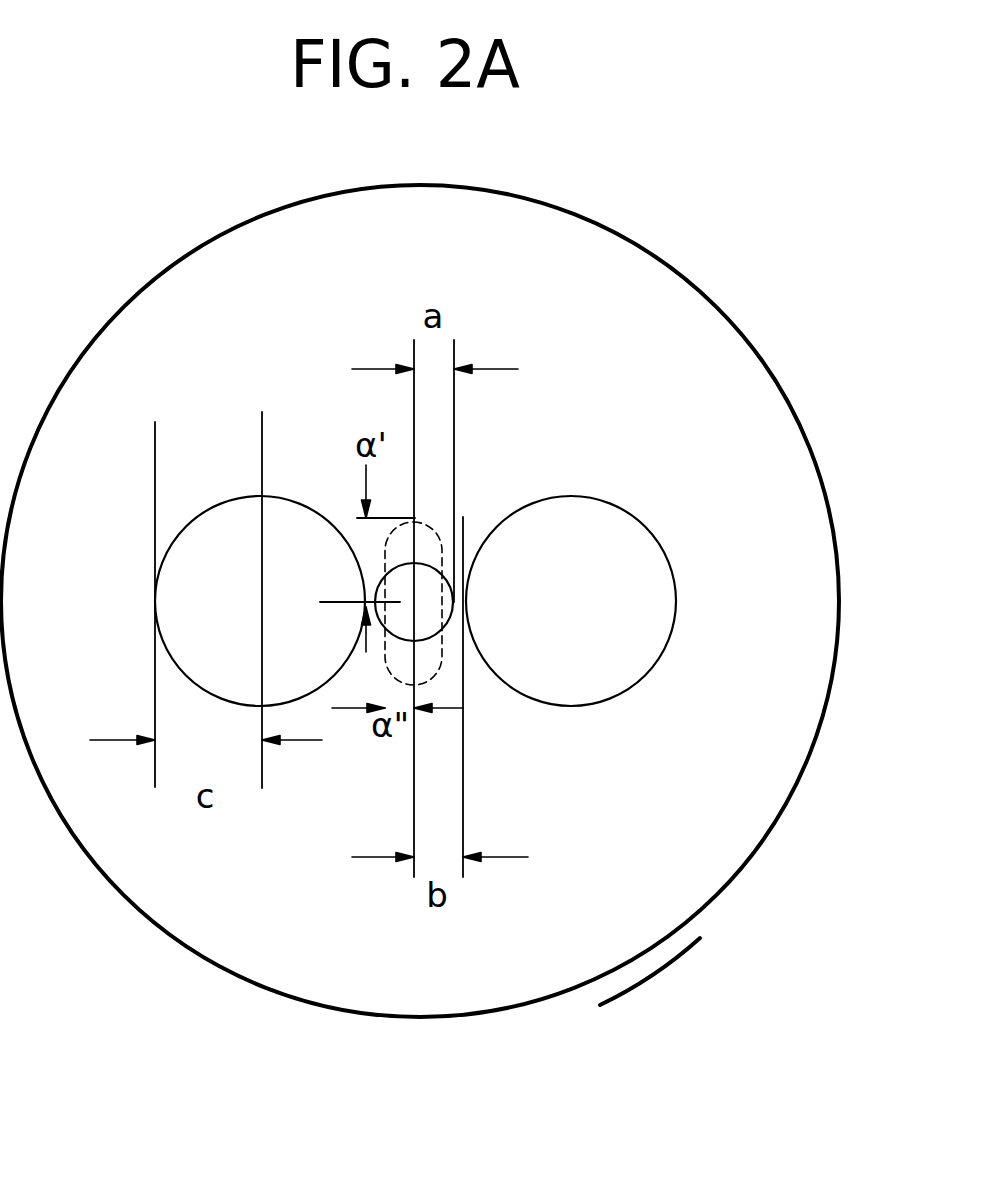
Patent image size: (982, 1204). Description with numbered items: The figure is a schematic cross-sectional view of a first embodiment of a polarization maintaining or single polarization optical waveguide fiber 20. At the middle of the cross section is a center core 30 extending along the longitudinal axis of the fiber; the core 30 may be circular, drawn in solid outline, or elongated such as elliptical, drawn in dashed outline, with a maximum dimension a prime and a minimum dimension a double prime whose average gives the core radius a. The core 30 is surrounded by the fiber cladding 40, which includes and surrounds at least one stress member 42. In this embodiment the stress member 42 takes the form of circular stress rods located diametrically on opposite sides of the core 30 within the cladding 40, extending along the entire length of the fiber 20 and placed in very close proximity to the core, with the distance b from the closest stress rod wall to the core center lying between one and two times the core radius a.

The optical waveguide fiber 20 is at (745, 252).
The center core 30 is at (427, 563).
The fiber cladding 40 is at (615, 938).
The stress member 42 is at (638, 567).